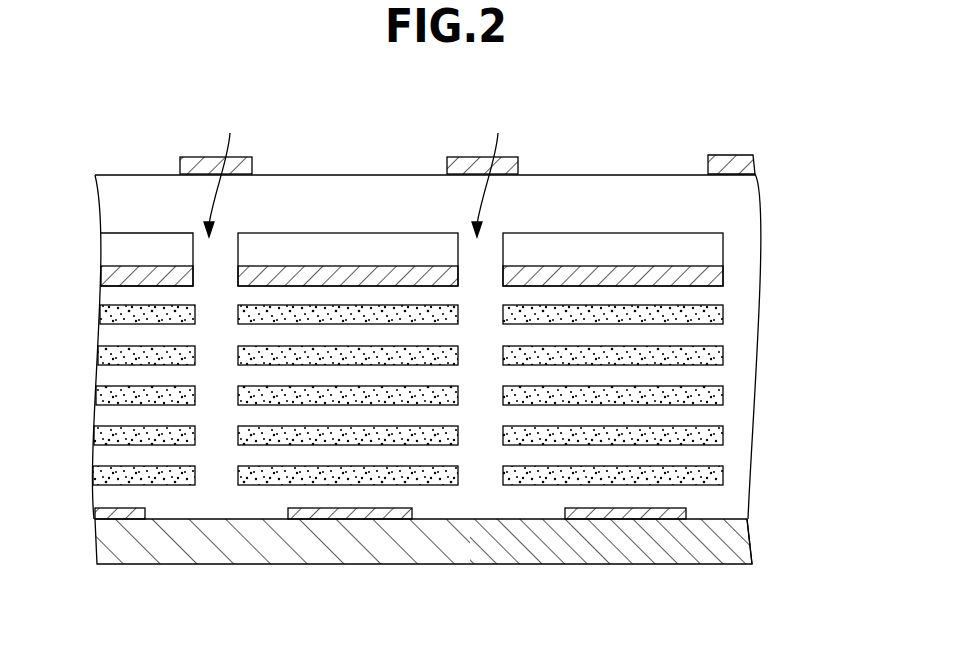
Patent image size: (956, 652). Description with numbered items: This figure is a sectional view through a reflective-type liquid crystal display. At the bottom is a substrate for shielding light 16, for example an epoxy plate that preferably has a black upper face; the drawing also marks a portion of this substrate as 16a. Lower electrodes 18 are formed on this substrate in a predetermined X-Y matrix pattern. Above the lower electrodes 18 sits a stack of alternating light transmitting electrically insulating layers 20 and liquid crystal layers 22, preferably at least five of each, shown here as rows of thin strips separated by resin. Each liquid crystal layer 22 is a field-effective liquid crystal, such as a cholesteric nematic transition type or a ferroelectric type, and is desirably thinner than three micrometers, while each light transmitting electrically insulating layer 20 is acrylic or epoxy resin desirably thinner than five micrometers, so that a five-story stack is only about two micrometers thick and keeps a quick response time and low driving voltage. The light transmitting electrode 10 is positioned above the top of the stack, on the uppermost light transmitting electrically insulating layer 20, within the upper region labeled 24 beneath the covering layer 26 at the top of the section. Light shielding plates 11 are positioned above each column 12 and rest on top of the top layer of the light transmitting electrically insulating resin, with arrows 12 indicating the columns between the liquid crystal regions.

The light transmitting electrode 10 is at (328, 267).
The light shielding plate 11 is at (251, 157).
The column 12 is at (359, 167).
The substrate for shielding light 16 is at (723, 557).
The substrate edge 16a is at (742, 530).
The lower electrode 18 is at (328, 512).
The light transmitting electrically insulating layer 20 is at (712, 373).
The liquid crystal layer 22 is at (720, 353).
The upper layer 24 is at (712, 248).
The encapsulation layer 26 is at (743, 195).